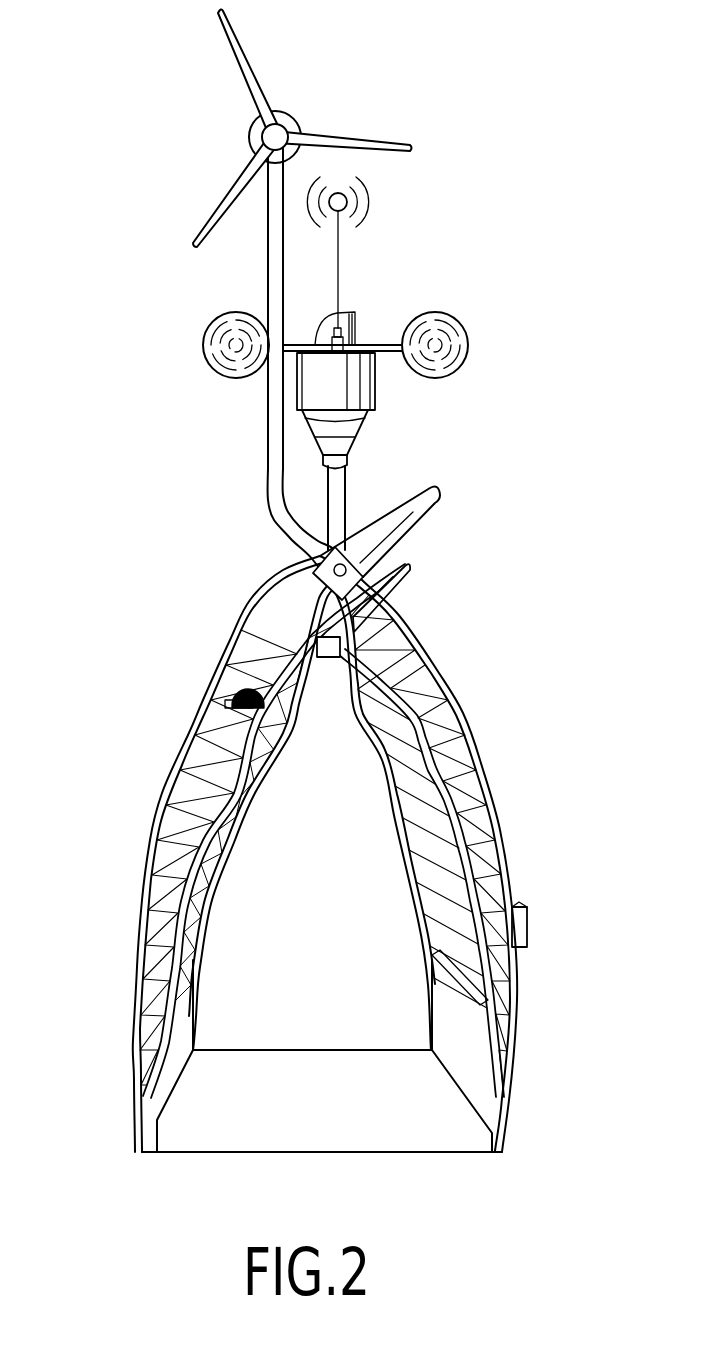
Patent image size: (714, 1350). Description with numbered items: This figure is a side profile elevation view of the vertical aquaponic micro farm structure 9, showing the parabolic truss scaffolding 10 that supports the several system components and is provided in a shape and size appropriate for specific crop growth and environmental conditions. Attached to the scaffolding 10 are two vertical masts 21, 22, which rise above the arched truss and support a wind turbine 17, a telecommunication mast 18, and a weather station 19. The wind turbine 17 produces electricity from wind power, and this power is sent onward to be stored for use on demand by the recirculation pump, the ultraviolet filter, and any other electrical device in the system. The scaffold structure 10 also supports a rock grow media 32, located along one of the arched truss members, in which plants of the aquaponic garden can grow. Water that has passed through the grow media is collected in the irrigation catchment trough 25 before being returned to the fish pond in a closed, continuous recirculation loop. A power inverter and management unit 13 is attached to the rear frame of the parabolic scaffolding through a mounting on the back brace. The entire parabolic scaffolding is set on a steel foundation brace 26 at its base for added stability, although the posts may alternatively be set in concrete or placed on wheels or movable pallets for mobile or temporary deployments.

The vertical aquaponic micro farm structure 9 is at (627, 197).
The parabolic truss scaffolding 10 is at (498, 808).
The power inverter and management unit 13 is at (527, 923).
The wind turbine 17 is at (355, 133).
The telecommunication mast 18 is at (340, 250).
The weather station 19 is at (419, 409).
The vertical mast 21 is at (268, 446).
The vertical mast 22 is at (347, 492).
The irrigation catchment trough 25 is at (180, 967).
The steel foundation brace 26 is at (145, 1135).
The rock grow media 32 is at (228, 683).